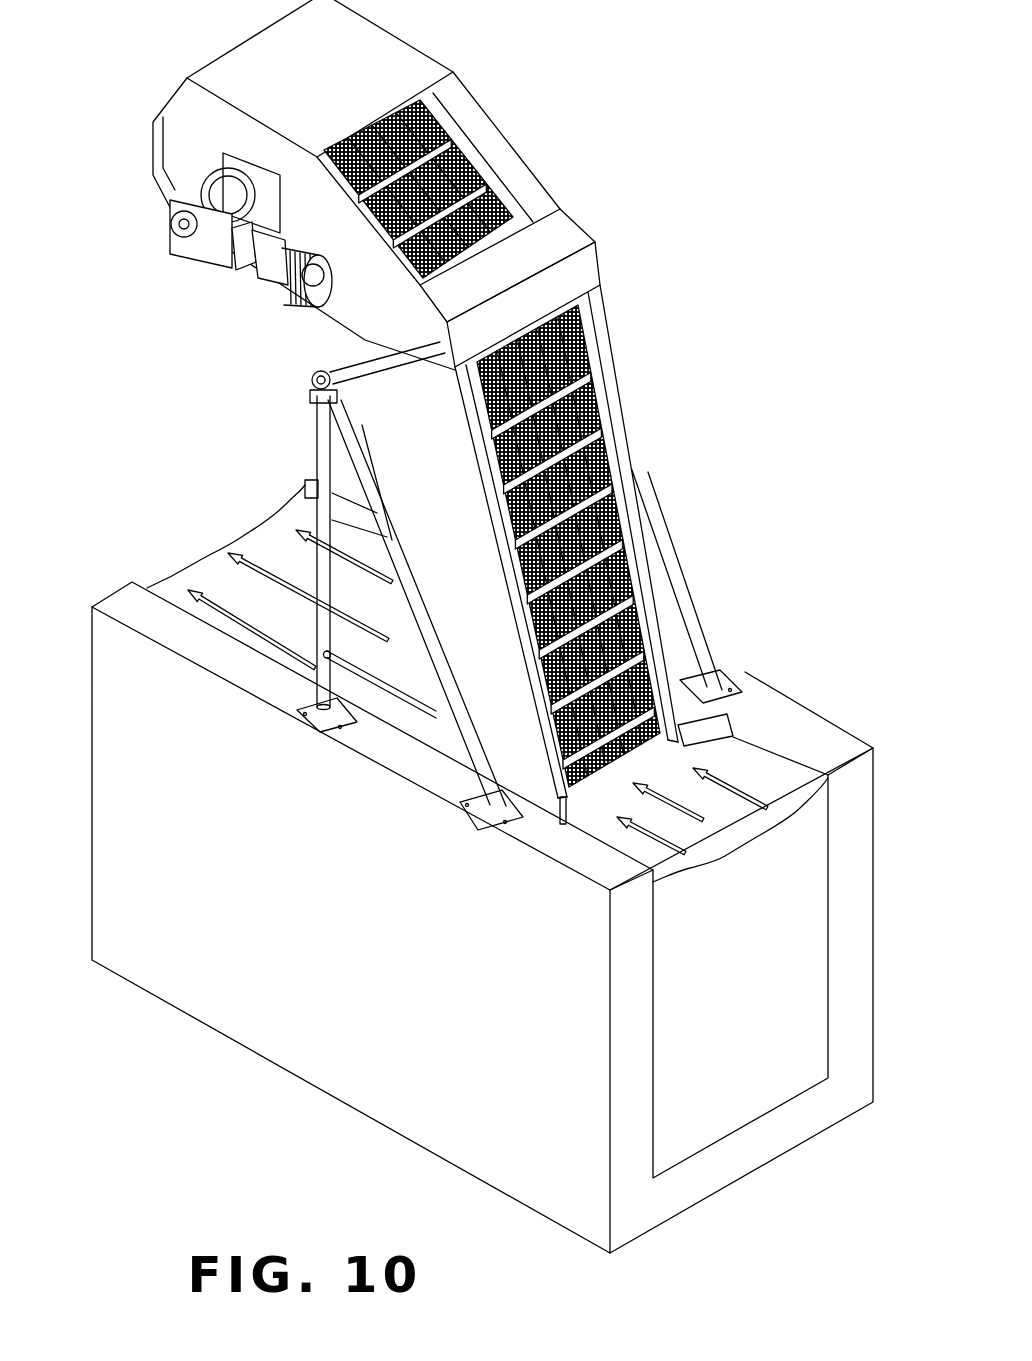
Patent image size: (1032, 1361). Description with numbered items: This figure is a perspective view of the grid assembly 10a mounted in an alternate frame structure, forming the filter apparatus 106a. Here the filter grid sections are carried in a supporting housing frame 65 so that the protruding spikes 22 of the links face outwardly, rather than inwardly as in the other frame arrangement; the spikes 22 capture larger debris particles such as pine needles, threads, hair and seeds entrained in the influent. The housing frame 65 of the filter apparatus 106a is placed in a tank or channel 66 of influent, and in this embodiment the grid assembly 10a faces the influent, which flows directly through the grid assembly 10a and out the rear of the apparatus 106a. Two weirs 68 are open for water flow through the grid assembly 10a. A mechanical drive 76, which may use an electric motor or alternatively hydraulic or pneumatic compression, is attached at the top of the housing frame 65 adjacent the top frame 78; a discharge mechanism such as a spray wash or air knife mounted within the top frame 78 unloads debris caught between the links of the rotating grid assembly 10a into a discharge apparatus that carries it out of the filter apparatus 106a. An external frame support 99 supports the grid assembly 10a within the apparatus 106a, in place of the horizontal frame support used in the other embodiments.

The grid assembly 10a is at (685, 462).
The filter apparatus 106a is at (580, 93).
The spikes 22 is at (628, 490).
The supporting housing frame 65 is at (662, 326).
The tank or channel 66 is at (232, 995).
The weirs 68 is at (737, 735).
The mechanical drive 76 is at (148, 289).
The top frame 78 is at (271, 58).
The external frame support 99 is at (306, 404).